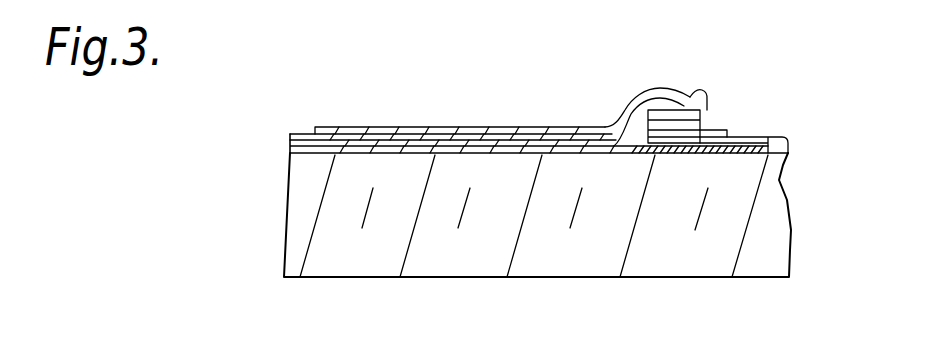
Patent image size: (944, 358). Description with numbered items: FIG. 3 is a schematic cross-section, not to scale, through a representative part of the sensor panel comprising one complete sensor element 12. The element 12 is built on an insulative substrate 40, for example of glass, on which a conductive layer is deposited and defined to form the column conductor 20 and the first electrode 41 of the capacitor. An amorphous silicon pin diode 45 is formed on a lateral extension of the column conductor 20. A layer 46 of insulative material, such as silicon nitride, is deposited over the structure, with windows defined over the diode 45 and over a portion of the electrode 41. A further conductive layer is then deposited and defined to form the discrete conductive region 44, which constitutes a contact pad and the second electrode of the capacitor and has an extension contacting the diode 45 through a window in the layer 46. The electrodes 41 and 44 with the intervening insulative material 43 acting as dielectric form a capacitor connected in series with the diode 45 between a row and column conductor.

The sensor element 12 is at (510, 82).
The column conductor 20 is at (758, 137).
The insulative substrate 40 is at (751, 263).
The first electrode 41 is at (321, 152).
The insulative material 43 is at (547, 127).
The conductive region 44 is at (412, 127).
The amorphous silicon pin diode 45 is at (700, 128).
The insulative layer 46 is at (624, 104).